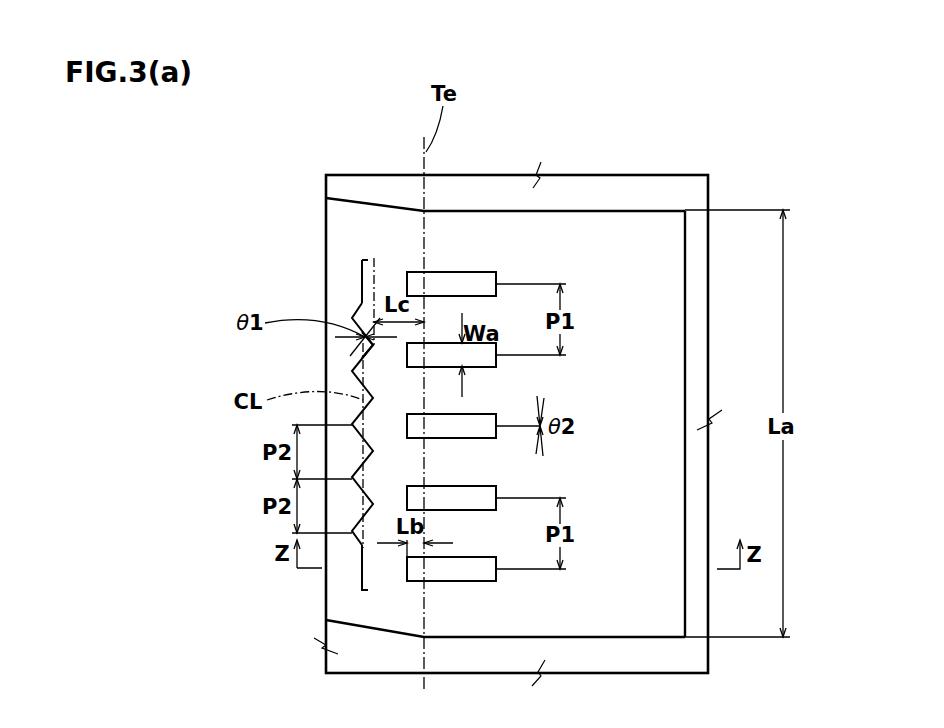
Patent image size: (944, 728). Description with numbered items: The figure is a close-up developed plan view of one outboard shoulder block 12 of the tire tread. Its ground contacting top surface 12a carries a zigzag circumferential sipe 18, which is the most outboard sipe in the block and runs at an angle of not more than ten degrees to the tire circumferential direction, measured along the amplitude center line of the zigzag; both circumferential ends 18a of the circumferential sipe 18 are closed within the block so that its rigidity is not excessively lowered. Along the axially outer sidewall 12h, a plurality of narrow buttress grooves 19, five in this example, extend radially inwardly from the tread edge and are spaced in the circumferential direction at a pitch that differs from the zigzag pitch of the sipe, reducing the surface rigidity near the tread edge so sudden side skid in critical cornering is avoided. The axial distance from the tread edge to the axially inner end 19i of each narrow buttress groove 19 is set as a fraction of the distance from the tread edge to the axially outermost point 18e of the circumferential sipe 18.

The outboard shoulder block 12 is at (625, 238).
The ground contacting top surface 12a is at (370, 230).
The axially outer sidewall 12h is at (638, 595).
The circumferential sipe 18 is at (362, 290).
The circumferential ends 18a is at (362, 260).
The axially outermost point 18e is at (370, 342).
The narrow buttress groove 19 is at (472, 285).
The axially inner end 19i is at (407, 280).